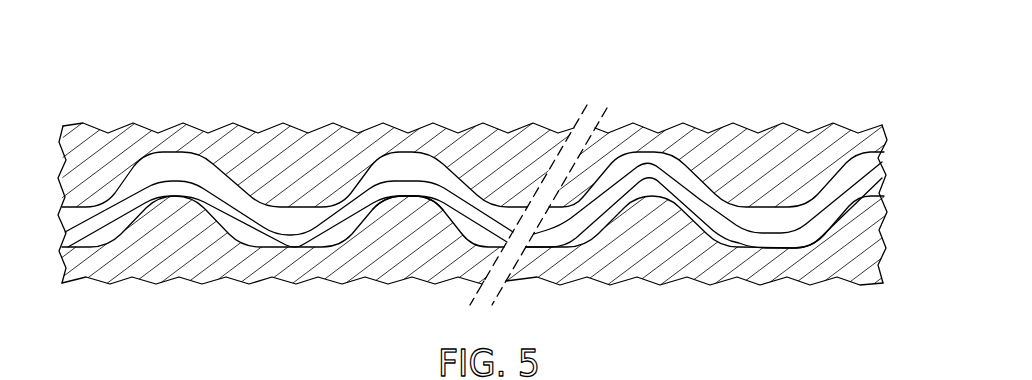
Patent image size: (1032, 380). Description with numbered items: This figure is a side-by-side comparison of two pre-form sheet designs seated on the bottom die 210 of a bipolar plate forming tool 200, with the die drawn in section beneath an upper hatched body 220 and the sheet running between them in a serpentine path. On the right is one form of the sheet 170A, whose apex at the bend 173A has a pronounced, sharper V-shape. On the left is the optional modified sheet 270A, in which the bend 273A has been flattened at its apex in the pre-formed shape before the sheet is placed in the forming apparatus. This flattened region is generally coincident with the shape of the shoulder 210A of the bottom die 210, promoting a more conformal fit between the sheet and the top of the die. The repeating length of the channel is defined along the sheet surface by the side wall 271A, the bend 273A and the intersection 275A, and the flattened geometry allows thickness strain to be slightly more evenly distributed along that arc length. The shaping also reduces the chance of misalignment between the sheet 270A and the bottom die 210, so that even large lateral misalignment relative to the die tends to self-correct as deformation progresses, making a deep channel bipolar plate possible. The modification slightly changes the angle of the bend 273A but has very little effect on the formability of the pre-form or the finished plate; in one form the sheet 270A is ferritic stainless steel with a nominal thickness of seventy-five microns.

The tool 200 is at (472, 162).
The second substrate 220 is at (107, 157).
The bottom die 210 is at (167, 253).
The shoulder 210A is at (443, 203).
The intersection 275A is at (457, 181).
The sheet 270A is at (77, 240).
The side wall 271A is at (480, 229).
The bend 273A is at (386, 258).
The bend 173A is at (704, 248).
The sheet 170A is at (860, 170).